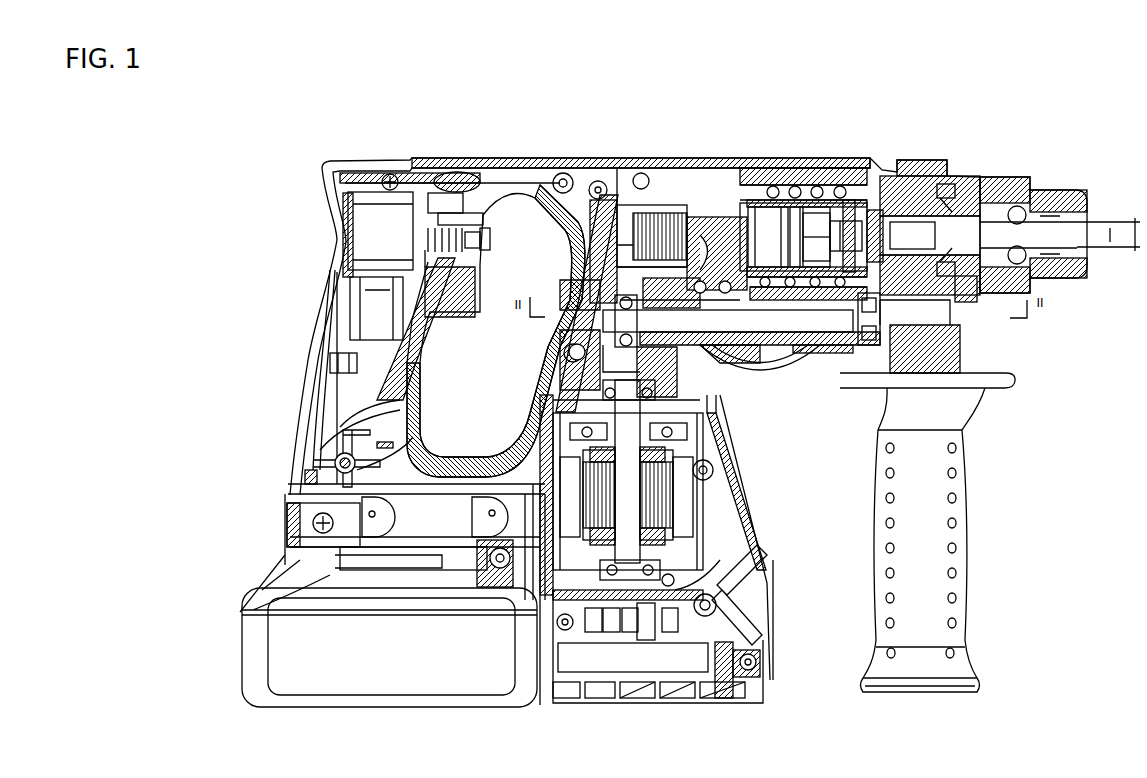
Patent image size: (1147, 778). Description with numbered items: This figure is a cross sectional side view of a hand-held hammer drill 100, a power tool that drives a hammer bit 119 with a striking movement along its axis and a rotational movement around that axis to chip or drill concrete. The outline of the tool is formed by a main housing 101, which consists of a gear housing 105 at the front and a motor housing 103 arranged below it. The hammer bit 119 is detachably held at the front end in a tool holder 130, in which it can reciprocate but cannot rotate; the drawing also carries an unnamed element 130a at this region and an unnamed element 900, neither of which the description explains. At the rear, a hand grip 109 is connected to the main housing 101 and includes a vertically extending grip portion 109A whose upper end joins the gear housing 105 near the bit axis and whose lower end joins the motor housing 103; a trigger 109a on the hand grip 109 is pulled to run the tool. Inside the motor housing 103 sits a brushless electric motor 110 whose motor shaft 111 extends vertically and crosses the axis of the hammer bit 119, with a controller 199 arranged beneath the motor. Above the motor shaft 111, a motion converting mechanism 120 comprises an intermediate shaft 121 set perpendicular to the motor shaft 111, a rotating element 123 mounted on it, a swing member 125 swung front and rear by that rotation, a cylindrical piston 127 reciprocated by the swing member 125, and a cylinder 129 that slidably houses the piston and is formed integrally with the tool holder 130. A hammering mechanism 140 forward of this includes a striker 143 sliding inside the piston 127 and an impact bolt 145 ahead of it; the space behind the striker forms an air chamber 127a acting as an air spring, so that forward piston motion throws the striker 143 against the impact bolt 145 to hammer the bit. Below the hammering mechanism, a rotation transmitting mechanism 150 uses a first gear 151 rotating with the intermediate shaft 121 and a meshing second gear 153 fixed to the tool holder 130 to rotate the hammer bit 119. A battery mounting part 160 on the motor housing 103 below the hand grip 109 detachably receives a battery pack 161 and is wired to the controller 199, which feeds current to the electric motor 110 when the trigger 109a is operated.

The hammer drill 100 is at (346, 142).
The main housing 101 is at (610, 155).
The motor housing 103 is at (740, 465).
The gear housing 105 is at (670, 174).
The hand grip 109 is at (310, 331).
The grip portion 109A is at (345, 276).
The trigger 109a is at (468, 300).
The electric motor 110 is at (693, 499).
The motor shaft 111 is at (627, 533).
The hammer bit 119 is at (1113, 236).
The motion converting mechanism 120 is at (800, 330).
The intermediate shaft 121 is at (843, 343).
The rotating element 123 is at (715, 347).
The swing member 125 is at (731, 205).
The piston 127 is at (785, 215).
The air chamber 127a is at (770, 230).
The cylinder 129 is at (826, 215).
The tool holder 130 is at (921, 180).
The tool holder sleeve 130a is at (1050, 200).
The hammering mechanism 140 is at (867, 225).
The striker 143 is at (808, 222).
The impact bolt 145 is at (963, 303).
The rotation transmitting mechanism 150 is at (896, 328).
The first gear 151 is at (850, 342).
The second gear 153 is at (845, 212).
The battery mounting part 160 is at (280, 549).
The battery pack 161 is at (368, 707).
The controller 199 is at (626, 662).
The auxiliary handle 900 is at (957, 540).